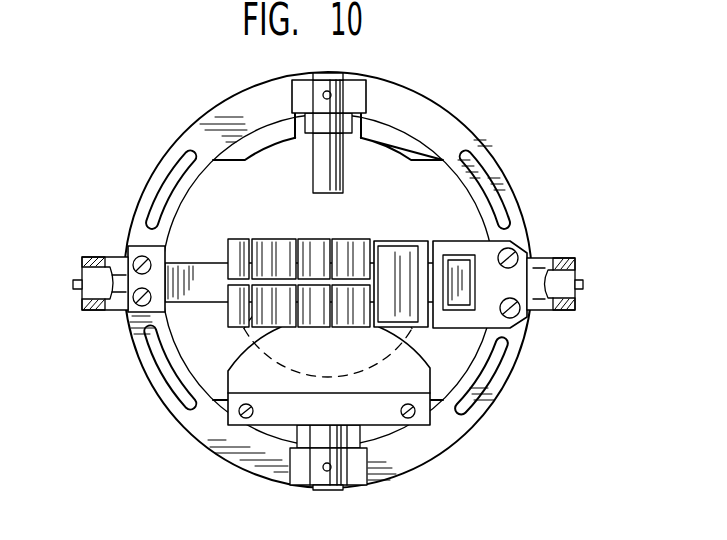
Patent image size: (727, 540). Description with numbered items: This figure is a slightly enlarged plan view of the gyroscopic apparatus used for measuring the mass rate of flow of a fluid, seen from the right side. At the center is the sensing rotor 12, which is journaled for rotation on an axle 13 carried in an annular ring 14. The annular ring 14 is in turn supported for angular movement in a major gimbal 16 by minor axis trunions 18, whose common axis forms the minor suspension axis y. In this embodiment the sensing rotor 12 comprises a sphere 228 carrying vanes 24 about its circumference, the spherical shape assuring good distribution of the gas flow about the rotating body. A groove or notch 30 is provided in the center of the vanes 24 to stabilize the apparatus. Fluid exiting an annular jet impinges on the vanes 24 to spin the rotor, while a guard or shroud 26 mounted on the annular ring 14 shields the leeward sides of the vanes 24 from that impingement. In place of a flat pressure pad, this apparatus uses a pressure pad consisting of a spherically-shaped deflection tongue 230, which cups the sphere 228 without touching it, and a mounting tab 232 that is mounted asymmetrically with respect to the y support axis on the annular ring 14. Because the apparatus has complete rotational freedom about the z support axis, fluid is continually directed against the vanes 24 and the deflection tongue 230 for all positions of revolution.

The sensing rotor 12 is at (364, 225).
The axle 13 is at (340, 168).
The annular ring 14 is at (242, 106).
The major gimbal 16 is at (538, 256).
The minor axis trunions 18 is at (76, 289).
The vanes 24 is at (408, 240).
The shroud 26 is at (411, 253).
The groove or notch 30 is at (182, 204).
The sphere 228 is at (326, 225).
The deflection tongue 230 is at (348, 356).
The mounting tab 232 is at (350, 422).